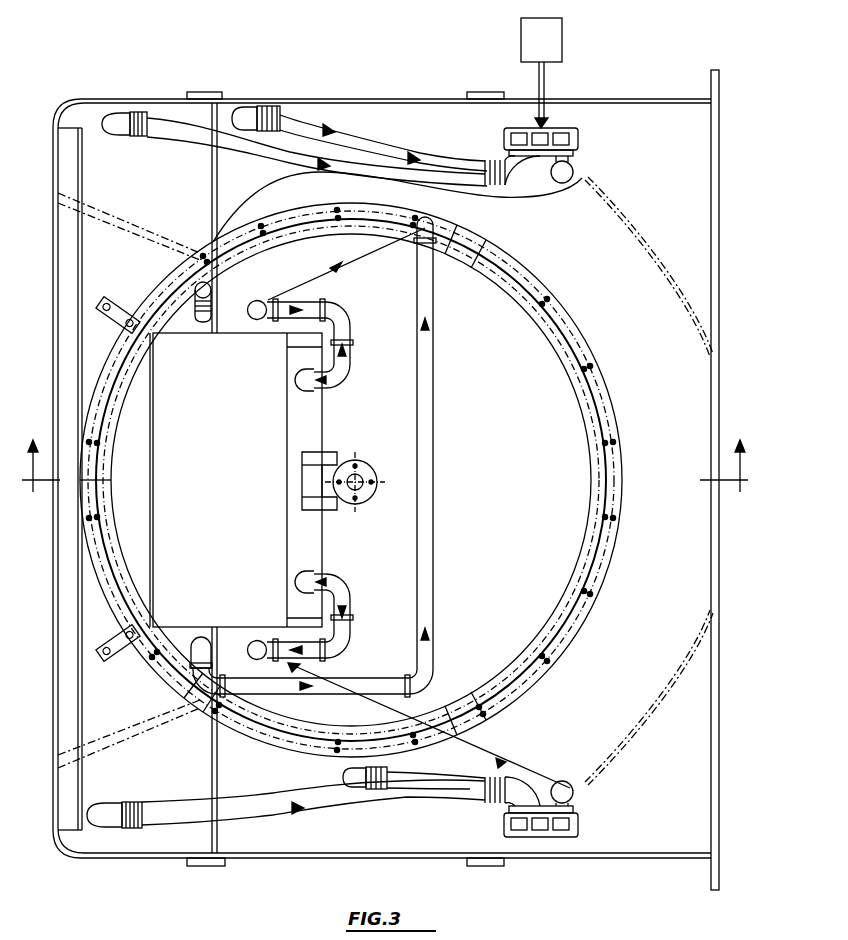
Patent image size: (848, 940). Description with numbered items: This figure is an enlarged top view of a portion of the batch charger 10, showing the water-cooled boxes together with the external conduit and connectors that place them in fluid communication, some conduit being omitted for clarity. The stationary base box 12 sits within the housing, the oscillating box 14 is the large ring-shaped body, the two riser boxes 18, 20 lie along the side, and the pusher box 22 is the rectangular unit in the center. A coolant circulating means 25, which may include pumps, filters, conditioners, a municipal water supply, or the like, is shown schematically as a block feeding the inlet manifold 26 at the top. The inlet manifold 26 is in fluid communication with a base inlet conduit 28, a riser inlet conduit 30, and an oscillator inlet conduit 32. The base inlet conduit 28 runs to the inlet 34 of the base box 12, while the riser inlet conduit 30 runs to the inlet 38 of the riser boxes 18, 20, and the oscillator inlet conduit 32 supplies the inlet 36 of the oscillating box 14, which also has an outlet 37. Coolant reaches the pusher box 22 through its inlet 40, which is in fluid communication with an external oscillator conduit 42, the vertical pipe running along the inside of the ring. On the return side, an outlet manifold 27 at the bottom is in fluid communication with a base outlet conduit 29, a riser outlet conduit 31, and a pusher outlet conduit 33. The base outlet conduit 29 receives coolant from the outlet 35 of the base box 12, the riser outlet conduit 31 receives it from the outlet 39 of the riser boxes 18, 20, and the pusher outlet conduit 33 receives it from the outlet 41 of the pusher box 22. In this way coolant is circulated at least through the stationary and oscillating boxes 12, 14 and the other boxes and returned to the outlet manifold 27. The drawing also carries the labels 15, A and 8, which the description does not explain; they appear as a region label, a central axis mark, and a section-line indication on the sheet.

The batch charger 10 is at (60, 84).
The base box 12 is at (624, 701).
The oscillating box 14 is at (519, 523).
The left chamber region 15 is at (144, 489).
The riser box 18 is at (162, 785).
The riser box 20 is at (46, 636).
The pusher box 22 is at (231, 560).
The coolant circulating means 25 is at (553, 52).
The inlet manifold 26 is at (568, 126).
The outlet manifold 27 is at (549, 842).
The base inlet conduit 28 is at (388, 128).
The base outlet conduit 29 is at (446, 772).
The riser inlet conduit 30 is at (167, 112).
The riser outlet conduit 31 is at (350, 810).
The oscillator inlet conduit 32 is at (588, 180).
The pusher outlet conduit 33 is at (581, 784).
The inlet 34 is at (235, 104).
The outlet 35 is at (341, 778).
The inlet 36 is at (196, 322).
The outlet 37 is at (184, 640).
The inlet 38 is at (106, 112).
The outlet 39 is at (92, 830).
The inlet 40 is at (293, 392).
The outlet 41 is at (292, 590).
The external oscillator conduit 42 is at (437, 444).
The rotation axis A is at (357, 477).
The section line 8- 8 is at (385, 484).